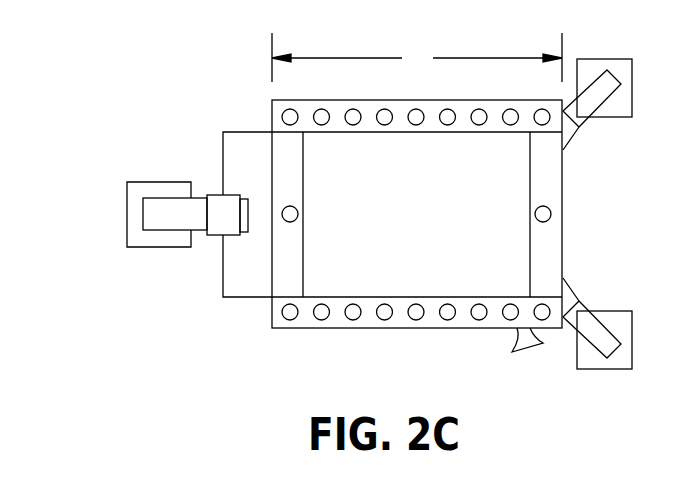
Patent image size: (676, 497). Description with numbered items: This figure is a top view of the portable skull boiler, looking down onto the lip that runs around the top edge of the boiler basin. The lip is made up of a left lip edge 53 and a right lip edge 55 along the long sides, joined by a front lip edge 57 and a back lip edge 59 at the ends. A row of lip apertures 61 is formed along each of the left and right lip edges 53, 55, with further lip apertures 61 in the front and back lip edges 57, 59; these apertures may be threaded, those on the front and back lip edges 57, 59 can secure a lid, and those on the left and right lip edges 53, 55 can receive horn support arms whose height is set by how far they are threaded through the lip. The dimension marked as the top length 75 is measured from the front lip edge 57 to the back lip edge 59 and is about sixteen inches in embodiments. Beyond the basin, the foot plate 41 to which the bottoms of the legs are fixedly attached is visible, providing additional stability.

The foot plate 41 is at (168, 192).
The left lip edge 53 is at (367, 322).
The right lip edge 55 is at (458, 108).
The front lip edge 57 is at (287, 160).
The back lip edge 59 is at (552, 200).
The lip apertures 61 is at (290, 318).
The top length 75 is at (417, 57).